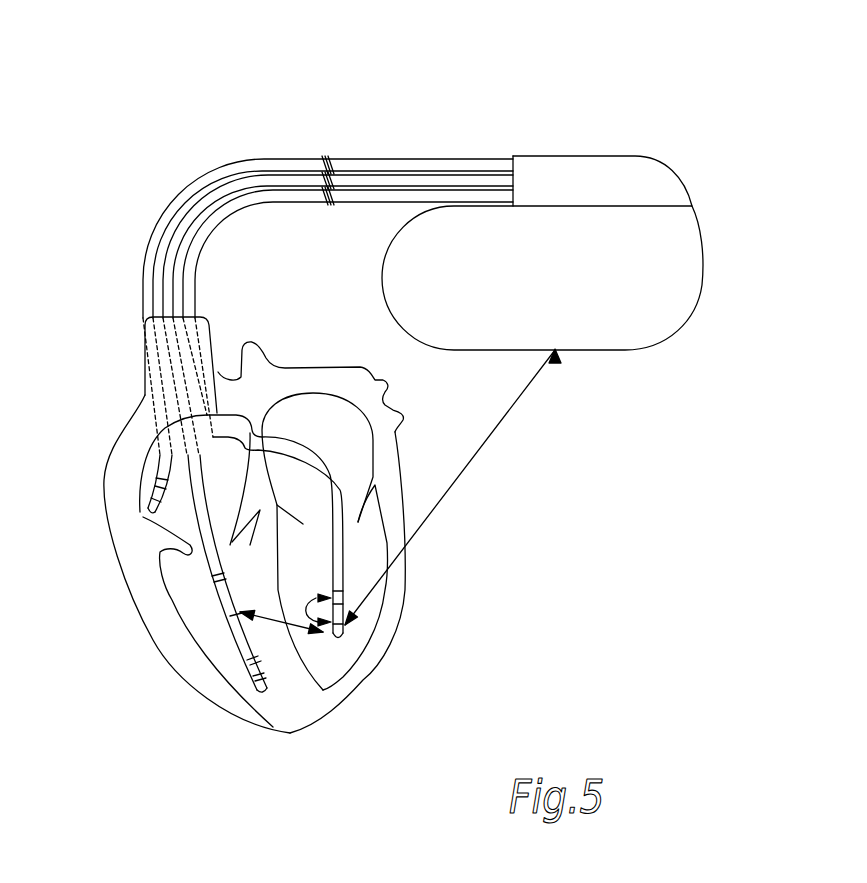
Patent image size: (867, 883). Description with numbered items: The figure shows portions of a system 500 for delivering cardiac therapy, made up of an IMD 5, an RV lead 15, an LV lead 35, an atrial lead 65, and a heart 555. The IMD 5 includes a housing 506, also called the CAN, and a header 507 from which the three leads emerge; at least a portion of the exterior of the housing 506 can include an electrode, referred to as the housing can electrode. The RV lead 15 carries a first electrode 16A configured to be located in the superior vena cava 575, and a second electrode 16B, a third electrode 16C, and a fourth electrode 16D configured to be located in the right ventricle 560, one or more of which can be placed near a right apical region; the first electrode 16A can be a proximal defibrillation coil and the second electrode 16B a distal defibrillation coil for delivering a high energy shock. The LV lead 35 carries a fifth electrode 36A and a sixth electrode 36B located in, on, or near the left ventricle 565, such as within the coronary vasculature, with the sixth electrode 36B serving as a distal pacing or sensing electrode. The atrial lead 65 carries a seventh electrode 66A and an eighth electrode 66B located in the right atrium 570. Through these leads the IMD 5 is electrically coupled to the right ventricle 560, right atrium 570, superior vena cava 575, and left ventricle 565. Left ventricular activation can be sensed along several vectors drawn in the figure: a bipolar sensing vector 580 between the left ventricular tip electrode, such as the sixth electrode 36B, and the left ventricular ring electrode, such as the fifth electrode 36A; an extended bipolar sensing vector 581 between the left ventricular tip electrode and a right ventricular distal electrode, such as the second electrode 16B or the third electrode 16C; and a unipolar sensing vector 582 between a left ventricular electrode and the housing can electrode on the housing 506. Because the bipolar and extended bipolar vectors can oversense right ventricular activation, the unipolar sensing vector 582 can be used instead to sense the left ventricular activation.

The system 500 is at (717, 63).
The IMD 5 is at (645, 162).
The header 507 is at (668, 174).
The housing 506 is at (703, 254).
The RV lead 15 is at (366, 178).
The atrial lead 65 is at (386, 159).
The LV lead 35 is at (364, 204).
The superior vena cava 575 is at (170, 357).
The first electrode 16A is at (183, 388).
The right atrium 570 is at (158, 456).
The seventh electrode 66A is at (163, 480).
The eighth electrode 66B is at (140, 512).
The right ventricle 560 is at (182, 578).
The second electrode 16B is at (222, 595).
The third electrode 16C is at (245, 664).
The fourth electrode 16D is at (262, 693).
The bipolar sensing vector 580 is at (318, 598).
The fifth electrode 36A is at (343, 594).
The sixth electrode 36B is at (350, 690).
The left ventricle 565 is at (350, 645).
The heart 555 is at (370, 667).
The extended bipolar sensing vector 581 is at (283, 628).
The unipolar sensing vector 582 is at (467, 468).